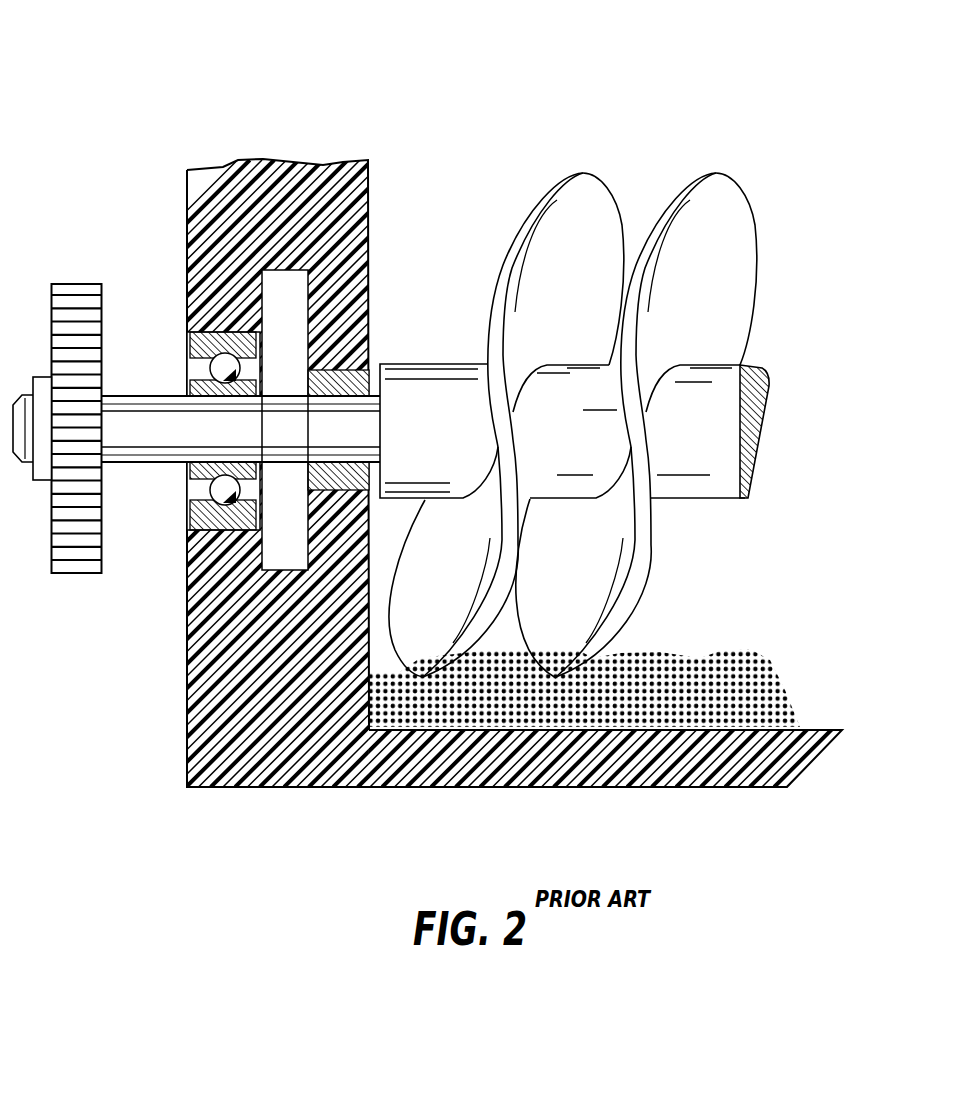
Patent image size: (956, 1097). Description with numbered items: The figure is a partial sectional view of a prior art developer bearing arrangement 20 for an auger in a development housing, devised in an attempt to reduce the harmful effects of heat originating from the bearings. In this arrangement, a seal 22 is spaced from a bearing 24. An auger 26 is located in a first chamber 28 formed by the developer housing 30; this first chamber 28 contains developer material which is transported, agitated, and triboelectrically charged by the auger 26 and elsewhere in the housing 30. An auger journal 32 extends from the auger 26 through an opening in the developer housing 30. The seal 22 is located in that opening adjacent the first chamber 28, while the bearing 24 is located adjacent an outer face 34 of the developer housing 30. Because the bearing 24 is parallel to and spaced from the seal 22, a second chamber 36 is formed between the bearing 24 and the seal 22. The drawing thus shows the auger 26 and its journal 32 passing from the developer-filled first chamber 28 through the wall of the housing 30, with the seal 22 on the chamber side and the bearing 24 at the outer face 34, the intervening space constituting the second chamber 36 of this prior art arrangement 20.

The developer bearing arrangement 20 is at (153, 93).
The seal 22 is at (338, 370).
The bearing 24 is at (193, 332).
The auger 26 is at (795, 145).
The first chamber 28 is at (770, 625).
The developer housing 30 is at (621, 770).
The auger journal 32 is at (352, 430).
The outer face 34 is at (190, 638).
The second chamber 36 is at (277, 545).